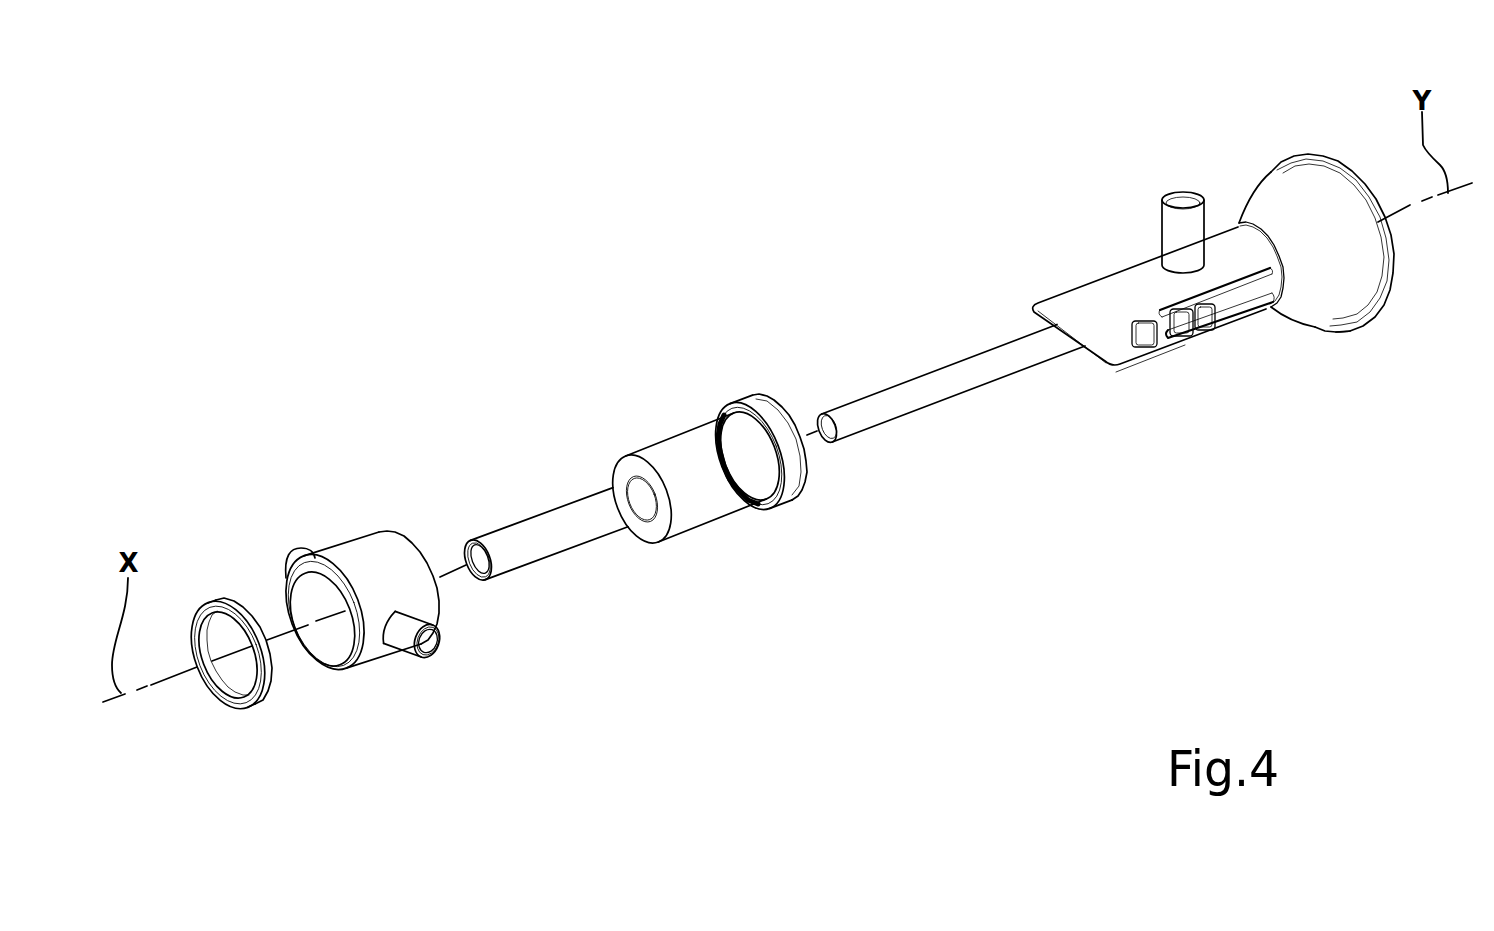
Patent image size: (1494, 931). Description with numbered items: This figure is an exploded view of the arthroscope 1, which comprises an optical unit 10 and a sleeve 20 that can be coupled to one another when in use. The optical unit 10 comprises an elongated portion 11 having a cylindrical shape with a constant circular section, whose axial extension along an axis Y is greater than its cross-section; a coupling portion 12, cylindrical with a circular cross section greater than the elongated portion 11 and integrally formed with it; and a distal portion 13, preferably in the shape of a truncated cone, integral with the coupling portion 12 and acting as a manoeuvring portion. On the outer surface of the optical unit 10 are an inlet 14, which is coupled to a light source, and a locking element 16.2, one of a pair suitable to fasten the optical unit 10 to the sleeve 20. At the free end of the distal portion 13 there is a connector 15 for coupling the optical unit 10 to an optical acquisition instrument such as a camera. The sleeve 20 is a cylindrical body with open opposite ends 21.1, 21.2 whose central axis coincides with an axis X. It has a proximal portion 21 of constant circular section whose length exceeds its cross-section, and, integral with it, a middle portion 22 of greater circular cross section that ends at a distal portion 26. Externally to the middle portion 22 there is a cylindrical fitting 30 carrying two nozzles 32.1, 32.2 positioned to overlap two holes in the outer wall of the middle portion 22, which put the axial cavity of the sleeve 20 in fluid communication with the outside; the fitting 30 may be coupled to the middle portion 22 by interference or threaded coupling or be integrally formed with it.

The arthroscope 1 is at (376, 194).
The optical unit 10 is at (1220, 150).
The elongated portion 11 is at (925, 390).
The coupling portion 12 is at (1078, 302).
The distal portion 13 is at (1360, 327).
The inlet 14 is at (1157, 175).
The connector 15 is at (1351, 148).
The locking element 16.2 is at (1203, 327).
The sleeve 20 is at (620, 391).
The proximal portion 21 is at (533, 543).
The open end 21.1 is at (468, 556).
The open end 21.2 is at (806, 473).
The middle portion 22 is at (712, 516).
The distal portion 26 is at (758, 410).
The cylindrical fitting 30 is at (380, 557).
The nozzle 32.1 is at (427, 643).
The nozzle 32.2 is at (300, 548).